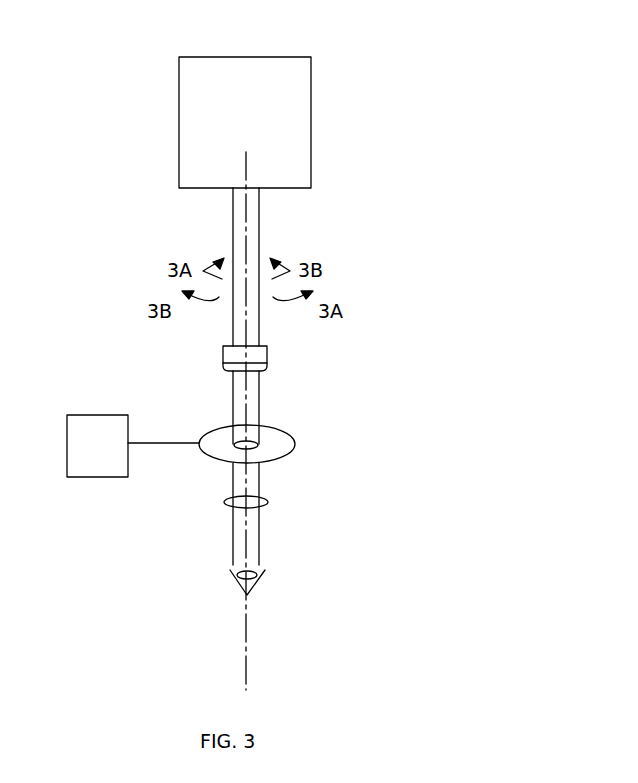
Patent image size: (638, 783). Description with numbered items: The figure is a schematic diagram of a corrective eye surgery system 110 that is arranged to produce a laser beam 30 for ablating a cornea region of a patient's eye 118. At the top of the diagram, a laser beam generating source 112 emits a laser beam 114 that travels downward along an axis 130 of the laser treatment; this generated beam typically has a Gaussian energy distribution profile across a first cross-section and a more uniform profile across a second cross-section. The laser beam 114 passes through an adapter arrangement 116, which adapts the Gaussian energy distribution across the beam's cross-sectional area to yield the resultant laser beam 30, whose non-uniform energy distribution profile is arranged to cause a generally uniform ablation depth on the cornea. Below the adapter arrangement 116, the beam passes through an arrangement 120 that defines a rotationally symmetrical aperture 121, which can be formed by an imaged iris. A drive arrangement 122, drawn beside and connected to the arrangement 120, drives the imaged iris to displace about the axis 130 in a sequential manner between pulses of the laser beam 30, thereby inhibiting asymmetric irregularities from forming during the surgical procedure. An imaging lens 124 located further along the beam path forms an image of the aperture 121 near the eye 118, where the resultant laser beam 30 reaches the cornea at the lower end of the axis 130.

The corrective eye surgery system 110 is at (430, 130).
The laser beam generating source 112 is at (304, 75).
The laser beam 114 is at (233, 197).
The adapter arrangement 116 is at (268, 347).
The patient's eye 118 is at (261, 583).
The arrangement defining a rotationally symmetrical aperture 120 is at (290, 427).
The rotationally symmetrical aperture 121 is at (250, 438).
The drive arrangement 122 is at (98, 422).
The imaging lens 124 is at (226, 503).
The laser beam 30 is at (261, 561).
The axis 130 is at (248, 660).